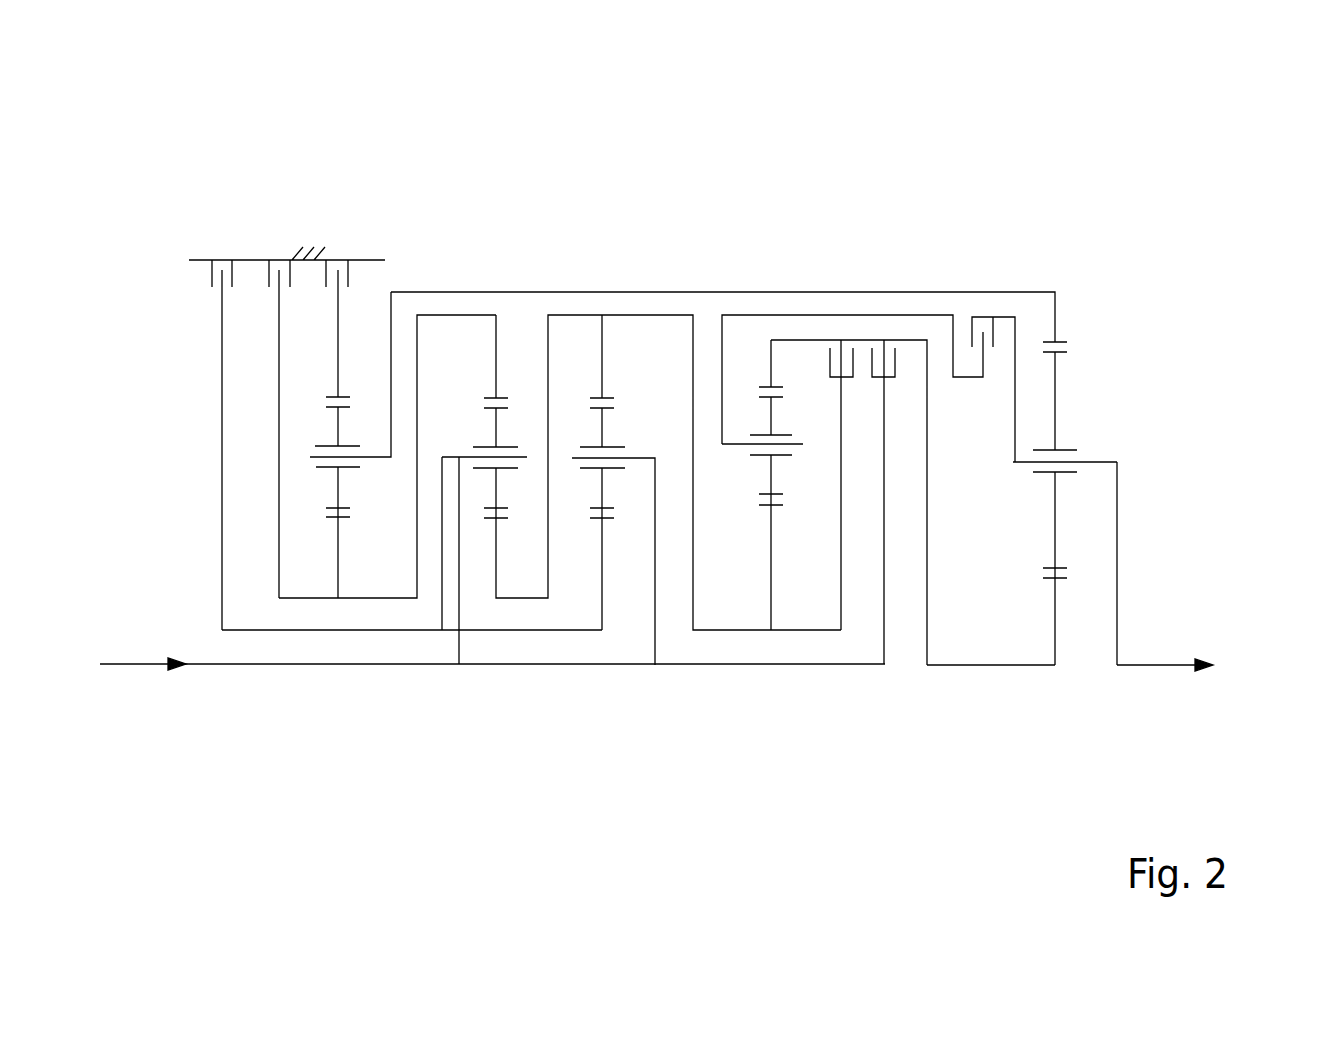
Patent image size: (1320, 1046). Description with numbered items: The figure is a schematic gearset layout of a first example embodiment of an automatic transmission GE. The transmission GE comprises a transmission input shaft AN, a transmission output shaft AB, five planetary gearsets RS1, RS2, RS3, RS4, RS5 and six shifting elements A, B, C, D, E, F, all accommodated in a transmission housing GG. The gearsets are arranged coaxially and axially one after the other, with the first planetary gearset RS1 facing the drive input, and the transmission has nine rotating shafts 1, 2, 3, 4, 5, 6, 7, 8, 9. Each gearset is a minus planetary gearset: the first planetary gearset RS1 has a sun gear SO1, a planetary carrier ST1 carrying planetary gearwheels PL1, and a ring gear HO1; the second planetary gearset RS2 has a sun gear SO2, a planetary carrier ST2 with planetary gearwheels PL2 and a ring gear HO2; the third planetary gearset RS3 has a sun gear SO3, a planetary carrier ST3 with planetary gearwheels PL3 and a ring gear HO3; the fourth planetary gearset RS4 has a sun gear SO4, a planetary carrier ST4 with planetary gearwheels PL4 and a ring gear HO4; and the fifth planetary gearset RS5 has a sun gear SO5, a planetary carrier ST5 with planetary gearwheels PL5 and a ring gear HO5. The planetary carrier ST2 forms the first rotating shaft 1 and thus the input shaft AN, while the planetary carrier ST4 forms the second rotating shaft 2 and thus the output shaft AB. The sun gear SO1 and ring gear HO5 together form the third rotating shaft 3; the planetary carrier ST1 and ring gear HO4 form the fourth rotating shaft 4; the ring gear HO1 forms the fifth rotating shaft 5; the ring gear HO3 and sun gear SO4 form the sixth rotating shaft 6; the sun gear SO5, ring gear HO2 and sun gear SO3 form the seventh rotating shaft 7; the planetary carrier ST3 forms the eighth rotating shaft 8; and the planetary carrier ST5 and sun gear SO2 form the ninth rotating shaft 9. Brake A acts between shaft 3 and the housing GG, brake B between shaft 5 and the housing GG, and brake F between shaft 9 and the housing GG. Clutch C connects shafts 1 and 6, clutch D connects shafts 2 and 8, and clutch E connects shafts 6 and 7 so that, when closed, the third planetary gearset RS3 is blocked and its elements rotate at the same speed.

The first rotating shaft 1 is at (238, 667).
The second rotating shaft 2 is at (1120, 527).
The third rotating shaft 3 is at (462, 313).
The fourth rotating shaft 4 is at (938, 292).
The fifth rotating shaft 5 is at (338, 318).
The sixth rotating shaft 6 is at (983, 667).
The seventh rotating shaft 7 is at (672, 292).
The eighth rotating shaft 8 is at (867, 316).
The ninth rotating shaft 9 is at (530, 630).
The transmission housing GG is at (294, 253).
The transmission GE is at (990, 195).
The transmission input shaft AN is at (159, 648).
The transmission output shaft AB is at (1165, 651).
The first shifting element A is at (277, 414).
The second shifting element B is at (340, 258).
The third shifting element C is at (893, 502).
The fourth shifting element D is at (993, 389).
The fifth shifting element E is at (830, 485).
The sixth shifting element F is at (219, 430).
The first planetary gearset RS1 is at (224, 544).
The second planetary gearset RS2 is at (696, 484).
The third planetary gearset RS3 is at (822, 484).
The fourth planetary gearset RS4 is at (1143, 484).
The fifth planetary gearset RS5 is at (463, 484).
The ring gear HO1 is at (337, 372).
The ring gear HO2 is at (600, 365).
The ring gear HO3 is at (770, 363).
The ring gear HO4 is at (1057, 323).
The ring gear HO5 is at (495, 365).
The planetary gearwheels PL1 is at (337, 425).
The planetary gearwheels PL2 is at (603, 427).
The planetary gearwheels PL3 is at (775, 413).
The planetary gearwheels PL4 is at (1057, 408).
The planetary gearwheels PL5 is at (497, 427).
The planetary carrier ST1 is at (310, 457).
The planetary carrier ST2 is at (640, 460).
The planetary carrier ST3 is at (730, 447).
The planetary carrier ST4 is at (1090, 460).
The planetary carrier ST5 is at (456, 530).
The sun gear SO1 is at (337, 572).
The sun gear SO2 is at (603, 583).
The sun gear SO3 is at (773, 583).
The sun gear SO4 is at (1057, 625).
The sun gear SO5 is at (480, 480).